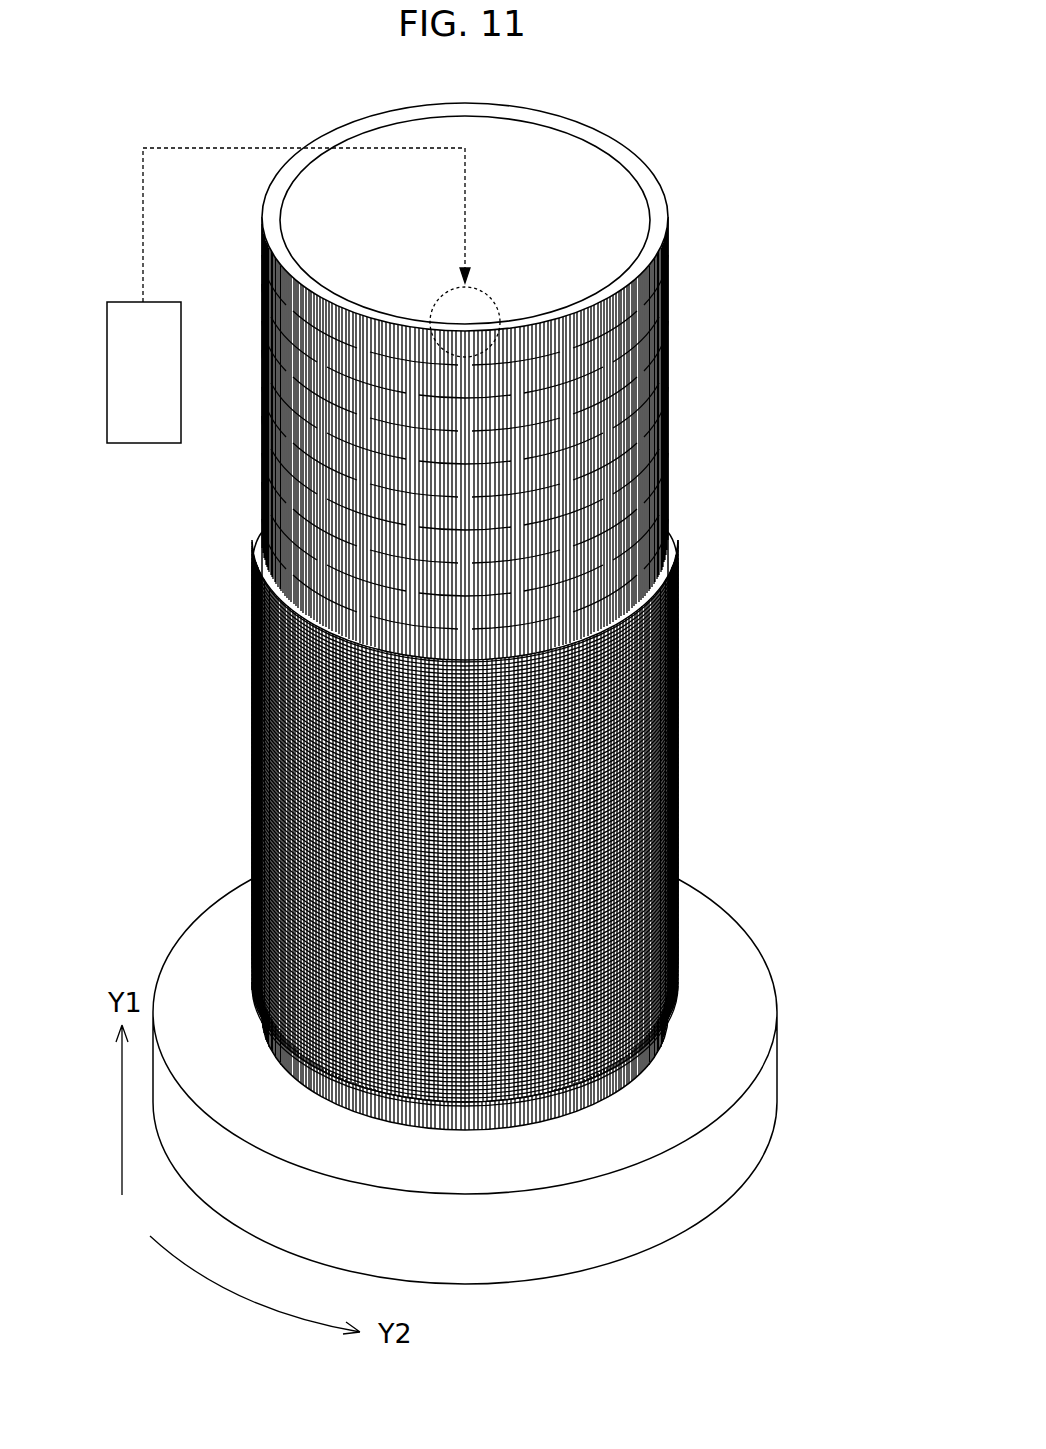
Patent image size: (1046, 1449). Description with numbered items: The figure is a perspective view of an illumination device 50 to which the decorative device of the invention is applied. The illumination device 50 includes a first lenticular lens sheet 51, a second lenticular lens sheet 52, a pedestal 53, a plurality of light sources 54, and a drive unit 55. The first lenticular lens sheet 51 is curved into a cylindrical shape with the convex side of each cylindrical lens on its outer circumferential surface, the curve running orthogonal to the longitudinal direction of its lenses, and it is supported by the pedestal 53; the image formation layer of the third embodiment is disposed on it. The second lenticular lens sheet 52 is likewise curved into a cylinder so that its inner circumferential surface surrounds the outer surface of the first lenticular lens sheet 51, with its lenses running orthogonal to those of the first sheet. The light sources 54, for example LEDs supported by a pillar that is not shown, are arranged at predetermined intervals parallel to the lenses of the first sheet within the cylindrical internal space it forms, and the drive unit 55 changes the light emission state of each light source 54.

The illumination device 50 is at (533, 608).
The first lenticular lens sheet 51 is at (534, 673).
The second lenticular lens sheet 52 is at (676, 780).
The pedestal 53 is at (698, 975).
The light sources 54 is at (665, 468).
The drive unit 55 is at (178, 320).